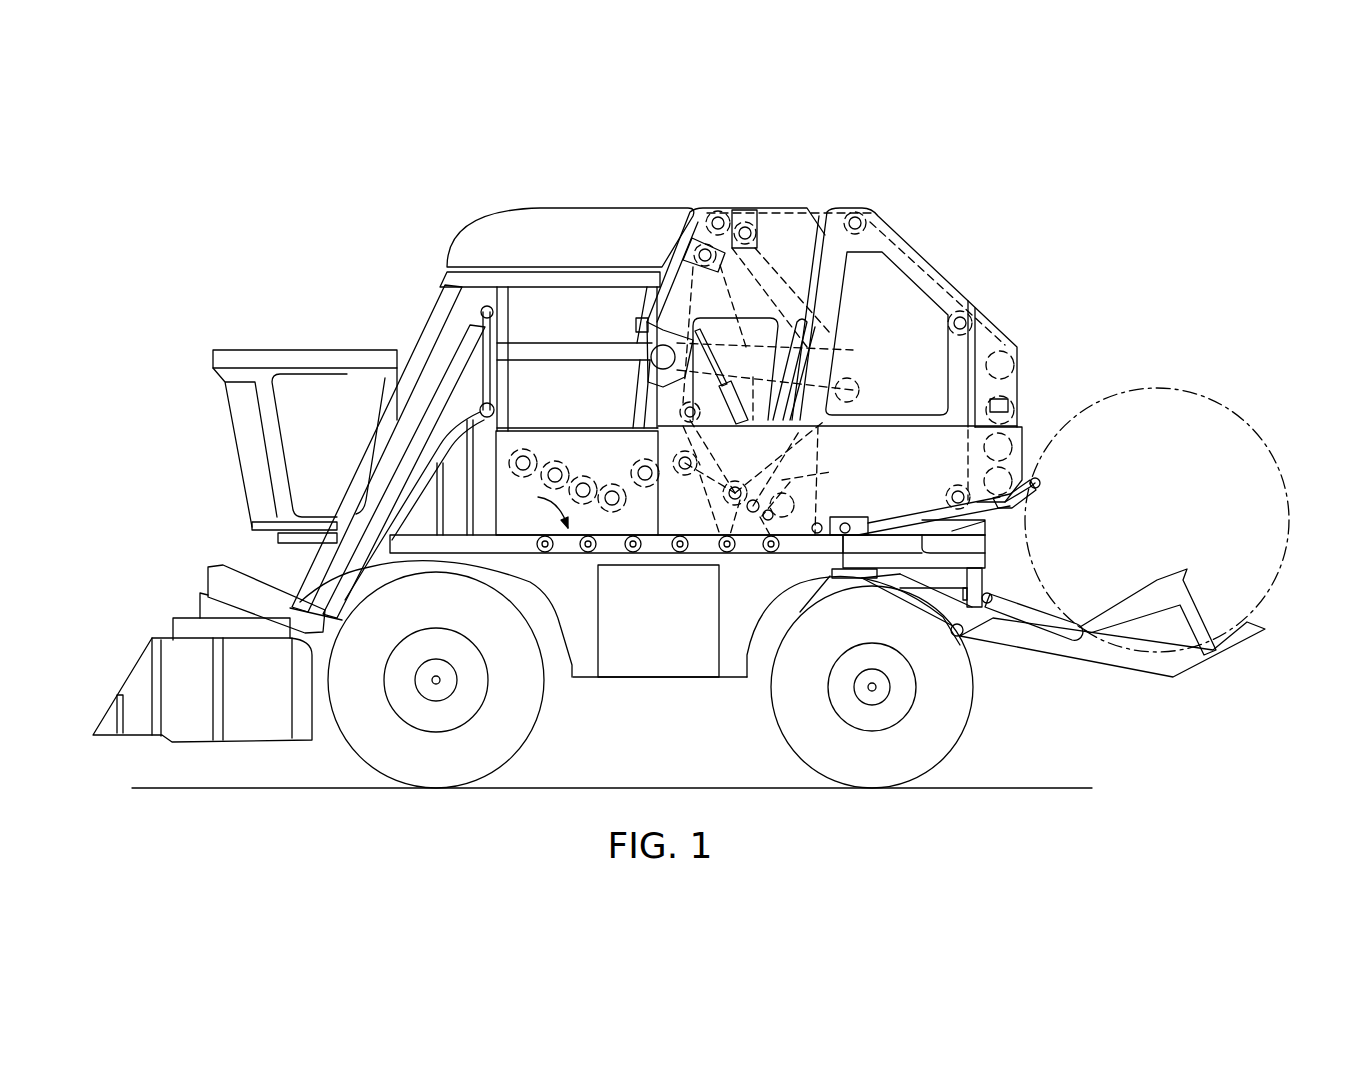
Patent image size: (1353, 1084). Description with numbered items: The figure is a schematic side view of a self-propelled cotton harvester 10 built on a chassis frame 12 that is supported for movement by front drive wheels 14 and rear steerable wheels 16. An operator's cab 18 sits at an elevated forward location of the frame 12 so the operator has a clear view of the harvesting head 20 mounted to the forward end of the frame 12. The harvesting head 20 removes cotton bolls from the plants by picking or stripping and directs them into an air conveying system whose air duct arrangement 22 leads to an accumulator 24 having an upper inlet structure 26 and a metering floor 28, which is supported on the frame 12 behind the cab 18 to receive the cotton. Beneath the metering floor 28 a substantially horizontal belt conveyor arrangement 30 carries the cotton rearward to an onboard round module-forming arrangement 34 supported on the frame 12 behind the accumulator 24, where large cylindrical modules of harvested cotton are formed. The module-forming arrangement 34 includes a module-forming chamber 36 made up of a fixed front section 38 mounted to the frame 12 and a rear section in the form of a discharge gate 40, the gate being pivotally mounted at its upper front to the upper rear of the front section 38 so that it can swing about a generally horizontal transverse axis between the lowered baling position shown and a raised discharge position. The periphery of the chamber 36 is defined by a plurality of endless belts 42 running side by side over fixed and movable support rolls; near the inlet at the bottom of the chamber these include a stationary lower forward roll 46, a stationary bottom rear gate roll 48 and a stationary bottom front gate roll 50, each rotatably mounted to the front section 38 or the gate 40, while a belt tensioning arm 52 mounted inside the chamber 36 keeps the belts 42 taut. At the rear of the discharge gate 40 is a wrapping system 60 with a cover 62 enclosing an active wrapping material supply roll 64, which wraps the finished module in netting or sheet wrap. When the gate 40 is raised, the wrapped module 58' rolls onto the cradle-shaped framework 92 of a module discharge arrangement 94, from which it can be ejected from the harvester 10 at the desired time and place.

The cotton harvester 10 is at (222, 182).
The chassis frame 12 is at (748, 557).
The front drive wheels 14 is at (530, 734).
The rear steerable wheels 16 is at (957, 734).
The cab 18 is at (322, 350).
The harvesting head 20 is at (137, 667).
The air duct arrangement 22 is at (430, 320).
The accumulator 24 is at (590, 187).
The upper inlet structure 26 is at (568, 250).
The metering floor 28 is at (588, 464).
The belt conveyor arrangement 30 is at (535, 505).
The module-forming arrangement 34 is at (849, 192).
The module-forming chamber 36 is at (892, 290).
The fixed front section 38 is at (770, 208).
The discharge gate 40 is at (897, 234).
The belts 42 is at (965, 292).
The stationary lower forward roll 46 is at (747, 432).
The stationary bottom rear gate roll 48 is at (957, 486).
The stationary bottom front gate roll 50 is at (805, 477).
The belt tensioning arm 52 is at (833, 380).
The wrapped module 58' is at (1157, 503).
The wrapping system 60 is at (1048, 364).
The cover 62 is at (998, 326).
The wrapping material supply roll 64 is at (1032, 478).
The cradle-shaped framework 92 is at (1157, 673).
The module discharge arrangement 94 is at (1228, 672).